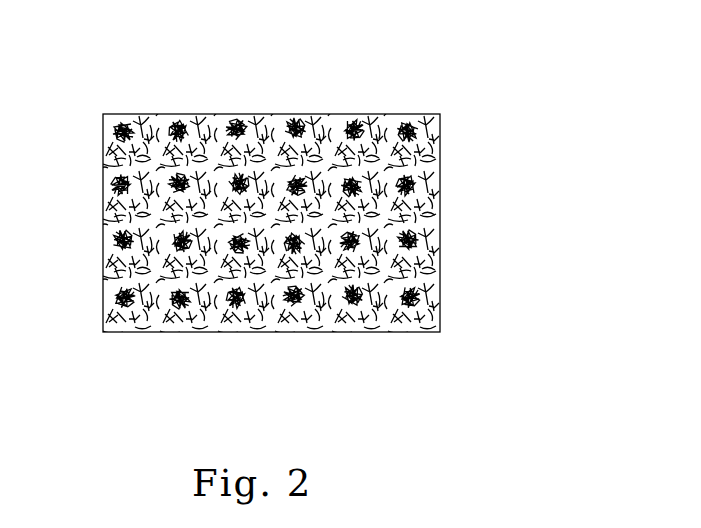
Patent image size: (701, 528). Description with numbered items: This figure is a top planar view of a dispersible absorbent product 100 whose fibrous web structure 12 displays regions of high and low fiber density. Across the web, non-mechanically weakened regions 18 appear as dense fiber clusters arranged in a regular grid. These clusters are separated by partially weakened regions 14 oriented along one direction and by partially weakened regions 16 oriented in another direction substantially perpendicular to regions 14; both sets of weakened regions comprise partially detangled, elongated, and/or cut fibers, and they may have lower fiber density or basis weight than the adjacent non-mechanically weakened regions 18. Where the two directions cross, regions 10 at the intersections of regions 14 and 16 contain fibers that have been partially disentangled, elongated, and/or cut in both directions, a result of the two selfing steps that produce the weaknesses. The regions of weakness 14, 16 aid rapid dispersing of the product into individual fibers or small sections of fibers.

The dispersible absorbent product 100 is at (462, 128).
The regions at the intersections of regions 14 and 16 10 is at (328, 162).
The fibrous web structure 12 is at (432, 225).
The partially weakened regions 14 is at (118, 214).
The partially weakened regions 16 is at (266, 302).
The non-mechanically weakened regions 18 is at (214, 122).